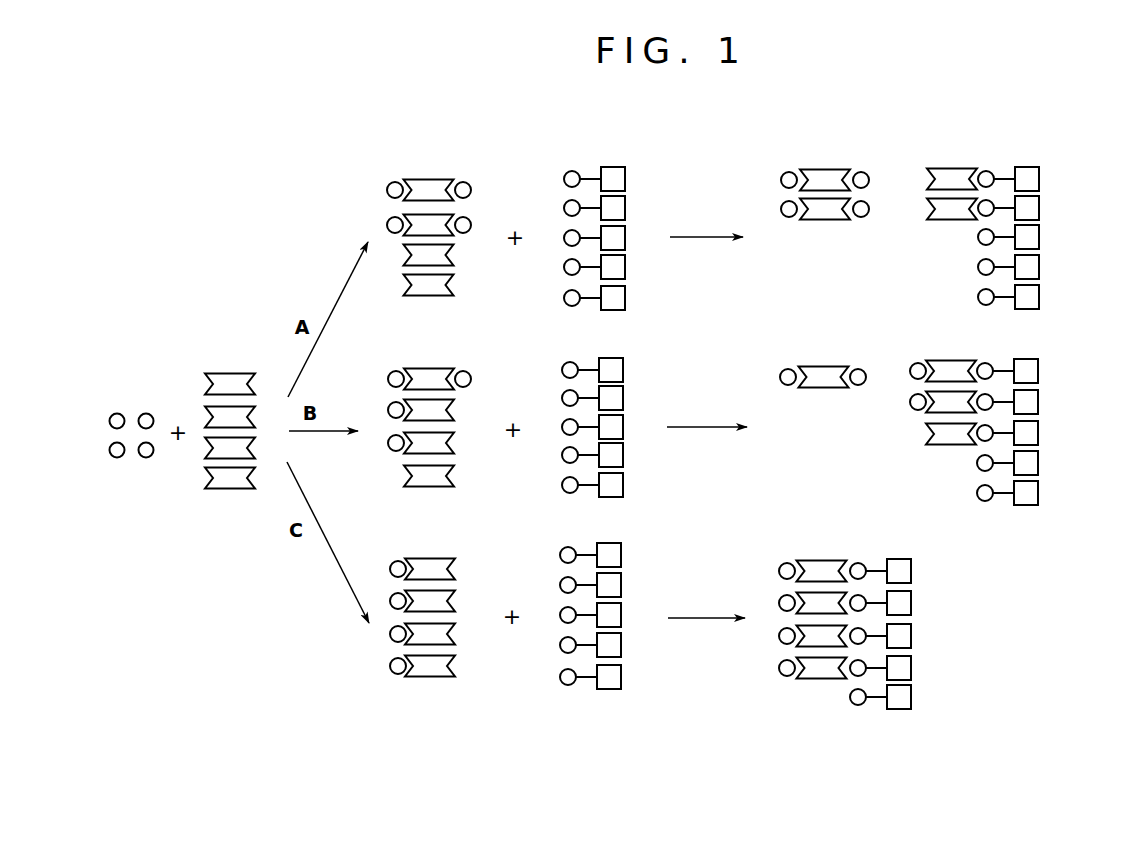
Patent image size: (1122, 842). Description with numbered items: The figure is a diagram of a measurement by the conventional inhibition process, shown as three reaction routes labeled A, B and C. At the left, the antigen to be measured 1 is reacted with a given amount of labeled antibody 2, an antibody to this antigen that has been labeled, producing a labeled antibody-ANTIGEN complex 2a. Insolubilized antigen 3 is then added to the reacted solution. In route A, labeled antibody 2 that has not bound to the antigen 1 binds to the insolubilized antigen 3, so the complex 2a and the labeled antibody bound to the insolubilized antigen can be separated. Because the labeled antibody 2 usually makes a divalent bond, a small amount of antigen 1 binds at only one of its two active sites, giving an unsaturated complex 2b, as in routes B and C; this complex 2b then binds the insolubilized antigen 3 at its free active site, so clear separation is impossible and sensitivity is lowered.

The antigen to be measured 1 is at (117, 458).
The labeled antibody 2 is at (223, 488).
The labeled antibody-ANTIGEN complex 2a is at (432, 178).
The unsaturated complex 2b is at (455, 438).
The insolubilized antigen 3 is at (618, 168).